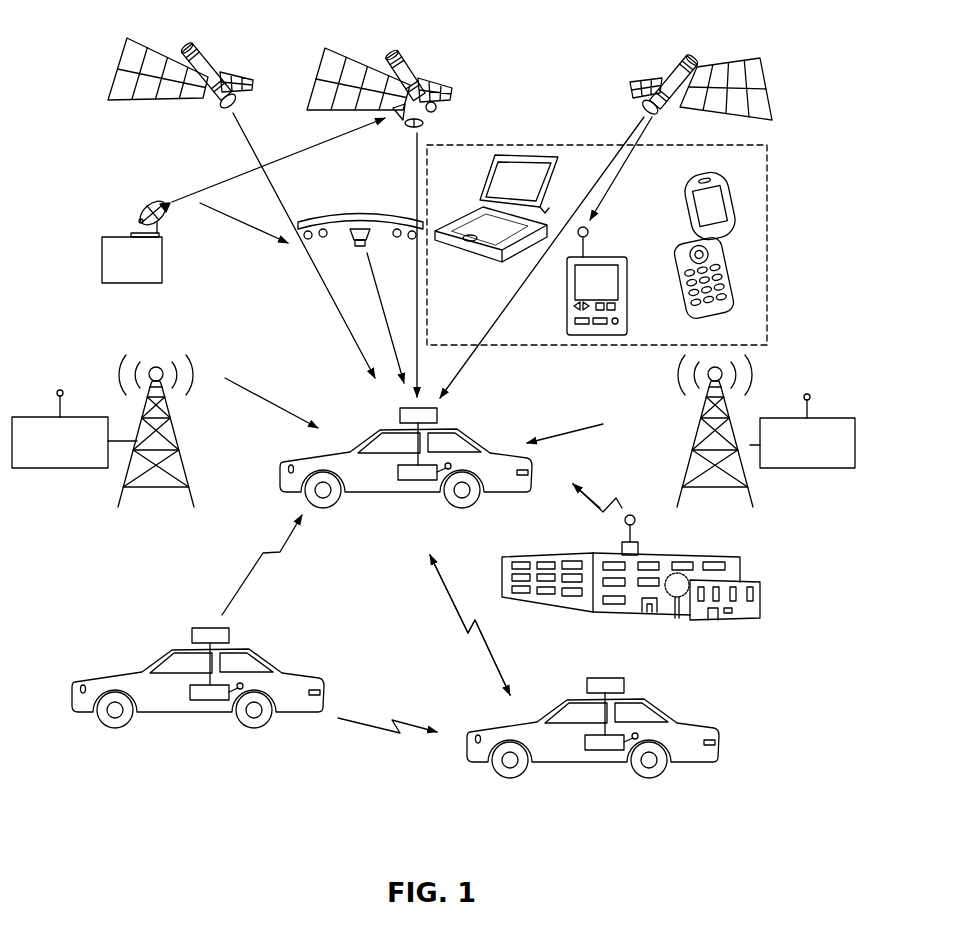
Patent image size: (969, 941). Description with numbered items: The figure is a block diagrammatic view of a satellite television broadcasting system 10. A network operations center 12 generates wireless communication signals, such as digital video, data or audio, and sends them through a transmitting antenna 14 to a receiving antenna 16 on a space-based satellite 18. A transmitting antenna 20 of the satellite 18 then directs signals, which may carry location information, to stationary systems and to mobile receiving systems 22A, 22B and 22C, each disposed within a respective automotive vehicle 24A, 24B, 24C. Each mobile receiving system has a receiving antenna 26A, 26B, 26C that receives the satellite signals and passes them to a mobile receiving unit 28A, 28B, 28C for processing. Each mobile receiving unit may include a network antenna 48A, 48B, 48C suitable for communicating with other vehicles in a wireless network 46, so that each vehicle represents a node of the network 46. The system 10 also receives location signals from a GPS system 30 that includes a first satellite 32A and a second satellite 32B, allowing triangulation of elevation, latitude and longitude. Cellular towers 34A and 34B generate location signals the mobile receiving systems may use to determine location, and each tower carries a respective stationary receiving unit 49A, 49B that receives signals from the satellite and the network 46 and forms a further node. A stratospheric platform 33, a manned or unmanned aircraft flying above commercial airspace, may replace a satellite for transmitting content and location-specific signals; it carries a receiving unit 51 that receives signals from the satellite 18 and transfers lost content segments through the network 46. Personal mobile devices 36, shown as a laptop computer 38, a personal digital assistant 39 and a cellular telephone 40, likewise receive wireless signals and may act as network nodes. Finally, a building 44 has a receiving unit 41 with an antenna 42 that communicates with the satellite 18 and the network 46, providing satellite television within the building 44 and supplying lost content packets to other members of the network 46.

The satellite television broadcasting system 10 is at (158, 163).
The network operations center 12 is at (163, 263).
The transmitting antenna 14 is at (167, 221).
The receiving antenna 16 is at (397, 126).
The satellite 18 is at (415, 75).
The transmitting antenna 20 is at (433, 126).
The mobile receiving system 22A is at (426, 440).
The mobile receiving system 22B is at (218, 660).
The mobile receiving system 22C is at (612, 712).
The automotive vehicle 24A is at (533, 462).
The automotive vehicle 24B is at (326, 682).
The automotive vehicle 24C is at (718, 731).
The receiving antenna 26A is at (400, 415).
The receiving antenna 26B is at (192, 635).
The receiving antenna 26C is at (602, 678).
The mobile receiving unit 28A is at (407, 481).
The mobile receiving unit 28B is at (208, 701).
The mobile receiving unit 28C is at (606, 751).
The GPS system 30 is at (100, 60).
The first satellite 32A is at (213, 62).
The second satellite 32B is at (680, 66).
The stratospheric platform 33 is at (327, 222).
The cellular tower 34A is at (177, 441).
The cellular tower 34B is at (696, 439).
The personal mobile device 36 is at (769, 176).
The laptop computer 38 is at (467, 253).
The personal digital assistant 39 is at (617, 257).
The cellular telephone 40 is at (690, 227).
The receiving unit 41 is at (622, 547).
The antenna 42 is at (640, 520).
The building 44 is at (703, 553).
The network 46 is at (90, 570).
The network antenna 48A is at (455, 468).
The network antenna 48B is at (247, 688).
The network antenna 48C is at (640, 738).
The receiving unit 49A is at (26, 416).
The receiving unit 49B is at (832, 417).
The receiving unit 51 is at (360, 228).